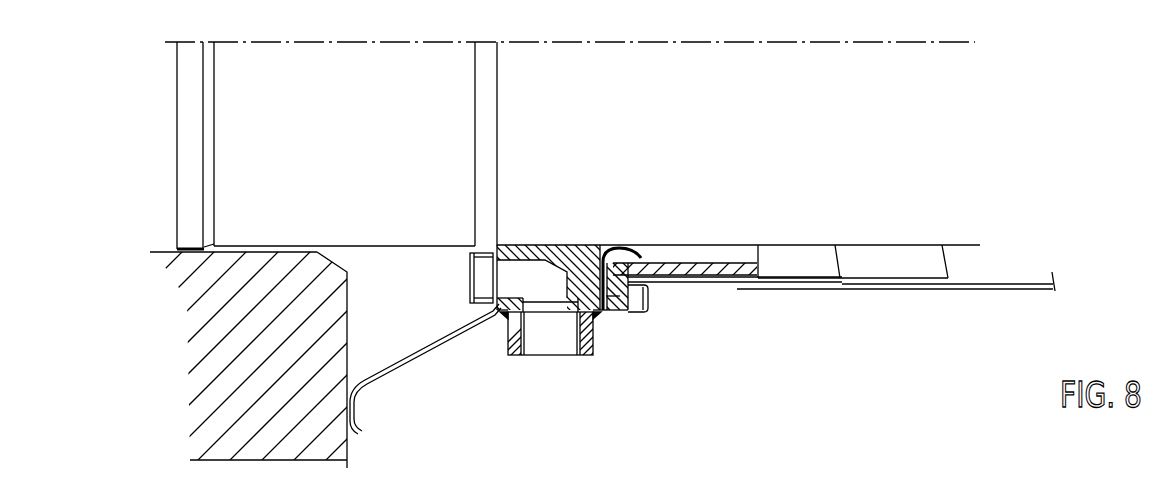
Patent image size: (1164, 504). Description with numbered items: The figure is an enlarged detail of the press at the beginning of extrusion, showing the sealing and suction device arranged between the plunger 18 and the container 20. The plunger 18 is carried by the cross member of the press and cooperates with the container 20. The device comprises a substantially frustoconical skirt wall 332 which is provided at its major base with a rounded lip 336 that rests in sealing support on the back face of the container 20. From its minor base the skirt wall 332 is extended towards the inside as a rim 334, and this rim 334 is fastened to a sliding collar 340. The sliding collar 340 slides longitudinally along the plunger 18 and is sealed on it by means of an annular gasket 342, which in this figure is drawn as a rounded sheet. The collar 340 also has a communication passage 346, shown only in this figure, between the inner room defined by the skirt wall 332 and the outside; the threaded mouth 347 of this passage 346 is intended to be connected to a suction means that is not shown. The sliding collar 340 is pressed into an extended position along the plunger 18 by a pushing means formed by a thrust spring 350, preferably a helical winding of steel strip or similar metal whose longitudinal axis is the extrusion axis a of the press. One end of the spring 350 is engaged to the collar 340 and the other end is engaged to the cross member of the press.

The extrusion axis a is at (630, 46).
The plunger 18 is at (365, 150).
The container 20 is at (273, 352).
The skirt wall 332 is at (437, 346).
The rim 334 is at (470, 279).
The rounded lip 336 is at (356, 405).
The sliding collar 340 is at (577, 246).
The annular gasket 342 is at (625, 246).
The communication passage 346 is at (608, 312).
The threaded mouth 347 is at (574, 336).
The thrust spring 350 is at (808, 283).